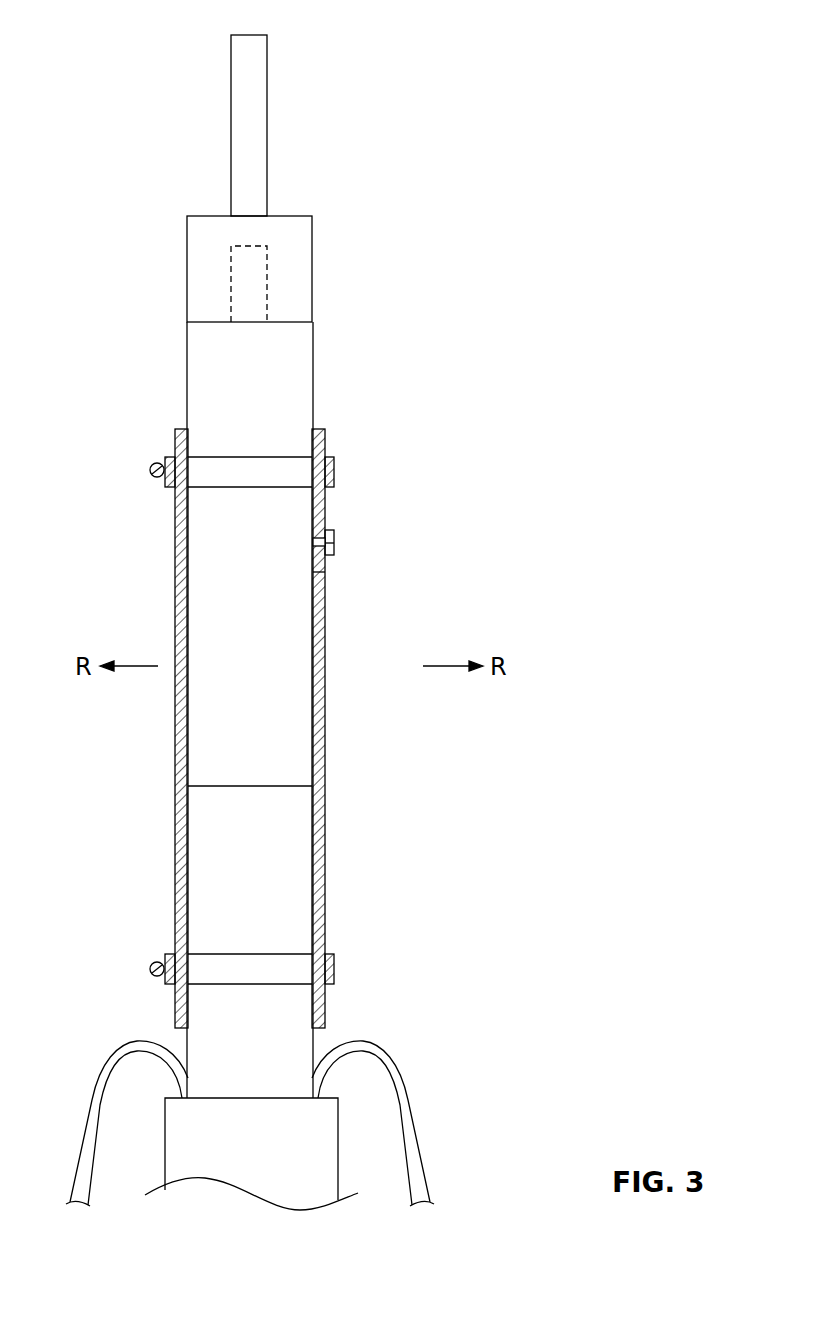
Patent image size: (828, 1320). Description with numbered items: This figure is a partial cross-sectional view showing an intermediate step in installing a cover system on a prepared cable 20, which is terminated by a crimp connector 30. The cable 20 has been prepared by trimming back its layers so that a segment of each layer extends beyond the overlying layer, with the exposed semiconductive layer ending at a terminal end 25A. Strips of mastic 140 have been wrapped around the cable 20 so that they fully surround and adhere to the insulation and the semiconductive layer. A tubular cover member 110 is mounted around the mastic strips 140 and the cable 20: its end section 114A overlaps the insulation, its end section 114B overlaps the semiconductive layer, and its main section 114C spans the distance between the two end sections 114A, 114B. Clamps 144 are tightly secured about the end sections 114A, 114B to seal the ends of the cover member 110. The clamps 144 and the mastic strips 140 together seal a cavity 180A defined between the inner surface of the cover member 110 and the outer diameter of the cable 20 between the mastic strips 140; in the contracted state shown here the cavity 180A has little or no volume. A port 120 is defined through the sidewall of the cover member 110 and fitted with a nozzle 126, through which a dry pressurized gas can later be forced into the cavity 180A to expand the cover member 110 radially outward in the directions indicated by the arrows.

The connector 30 is at (314, 232).
The cable 20 is at (314, 344).
The cover member 110 is at (267, 728).
The end section 114A is at (182, 490).
The end section 114B is at (182, 955).
The main section 114C is at (316, 630).
The mastic strips 140 is at (250, 465).
The clamps 144 is at (150, 467).
The nozzle 126 is at (330, 530).
The port 120 is at (315, 543).
The cavity 180A is at (315, 575).
The terminal end 25A is at (265, 785).